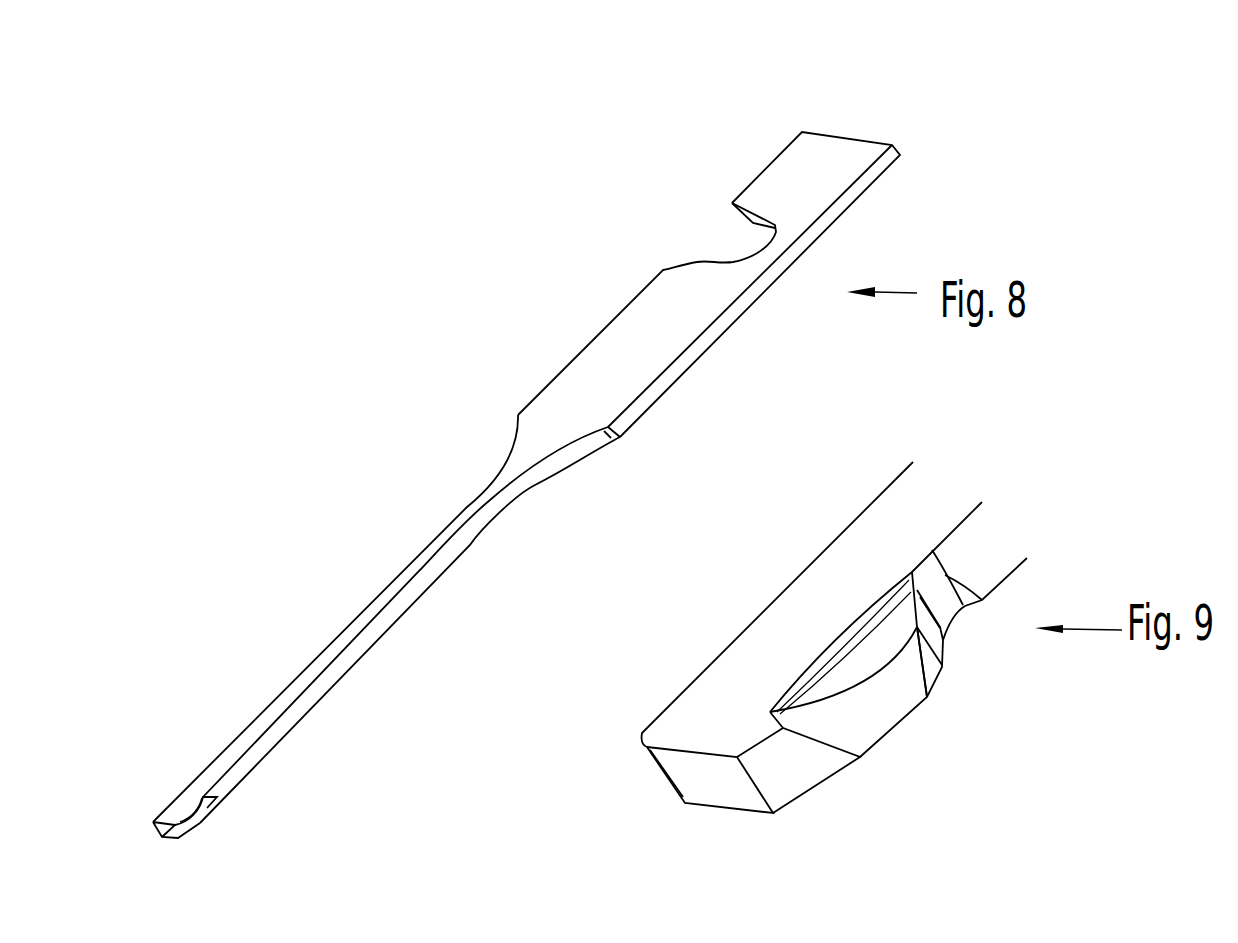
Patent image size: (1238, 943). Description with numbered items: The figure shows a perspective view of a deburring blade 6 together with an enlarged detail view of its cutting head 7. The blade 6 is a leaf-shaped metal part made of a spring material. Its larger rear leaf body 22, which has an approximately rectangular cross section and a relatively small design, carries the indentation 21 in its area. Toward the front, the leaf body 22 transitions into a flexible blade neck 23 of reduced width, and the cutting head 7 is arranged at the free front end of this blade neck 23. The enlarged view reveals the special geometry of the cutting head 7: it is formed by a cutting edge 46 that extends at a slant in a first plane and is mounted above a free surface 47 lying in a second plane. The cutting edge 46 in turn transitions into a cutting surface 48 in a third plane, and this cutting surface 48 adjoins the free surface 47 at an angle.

In FIG. 8, the blade 6 is at (531, 293).
In FIG. 8, the cutting head 7 is at (174, 724).
In FIG. 9, the cutting head 7 is at (682, 596).
In FIG. 8, the indentation 21 is at (735, 238).
In FIG. 8, the leaf body 22 is at (820, 163).
In FIG. 8, the blade neck 23 is at (457, 530).
In FIG. 9, the cutting edge 46 is at (910, 572).
In FIG. 9, the free surface 47 is at (928, 628).
In FIG. 9, the cutting surface 48 is at (878, 650).